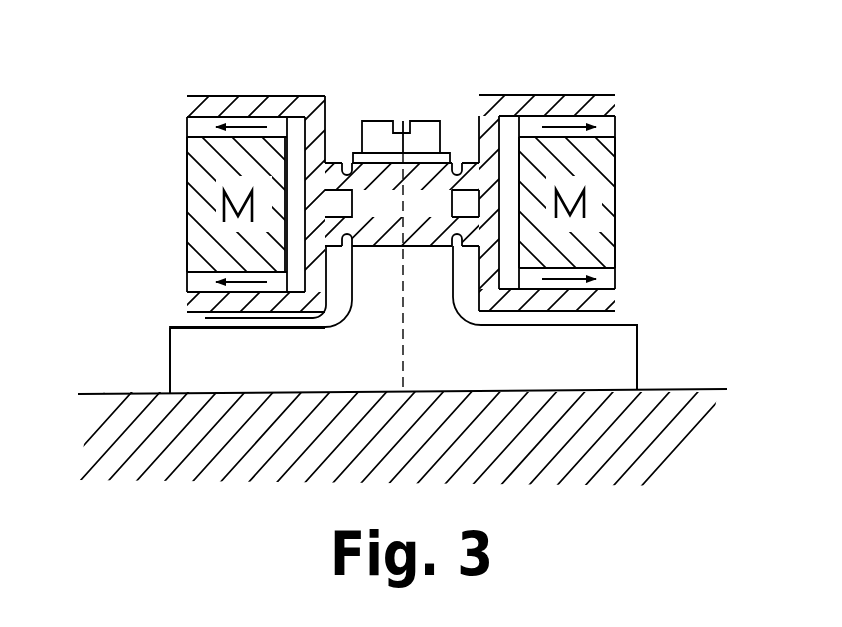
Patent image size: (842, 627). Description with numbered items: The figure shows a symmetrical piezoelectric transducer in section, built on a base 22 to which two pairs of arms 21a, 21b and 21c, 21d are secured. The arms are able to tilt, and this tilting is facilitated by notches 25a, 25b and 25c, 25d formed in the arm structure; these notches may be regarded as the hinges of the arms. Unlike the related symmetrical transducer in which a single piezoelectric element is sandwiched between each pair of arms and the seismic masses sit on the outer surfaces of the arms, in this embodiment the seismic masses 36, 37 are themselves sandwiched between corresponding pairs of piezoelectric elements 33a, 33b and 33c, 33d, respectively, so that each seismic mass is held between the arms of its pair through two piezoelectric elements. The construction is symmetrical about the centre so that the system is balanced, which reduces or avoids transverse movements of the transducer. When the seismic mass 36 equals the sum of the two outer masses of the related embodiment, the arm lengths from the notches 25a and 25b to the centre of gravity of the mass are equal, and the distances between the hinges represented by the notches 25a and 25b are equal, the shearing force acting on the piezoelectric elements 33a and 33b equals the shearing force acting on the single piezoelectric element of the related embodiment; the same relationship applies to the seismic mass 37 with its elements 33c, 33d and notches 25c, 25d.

The arm 21a is at (220, 108).
The arm 21b is at (218, 305).
The arm 21c is at (557, 304).
The arm 21d is at (532, 106).
The base 22 is at (622, 359).
The notch 25a is at (344, 158).
The notch 25b is at (347, 250).
The notch 25c is at (456, 250).
The notch 25d is at (457, 158).
The piezoelectric element 33a is at (189, 128).
The piezoelectric element 33b is at (192, 289).
The piezoelectric element 33c is at (608, 276).
The piezoelectric element 33d is at (618, 118).
The seismic mass 36 is at (198, 206).
The seismic mass 37 is at (600, 165).